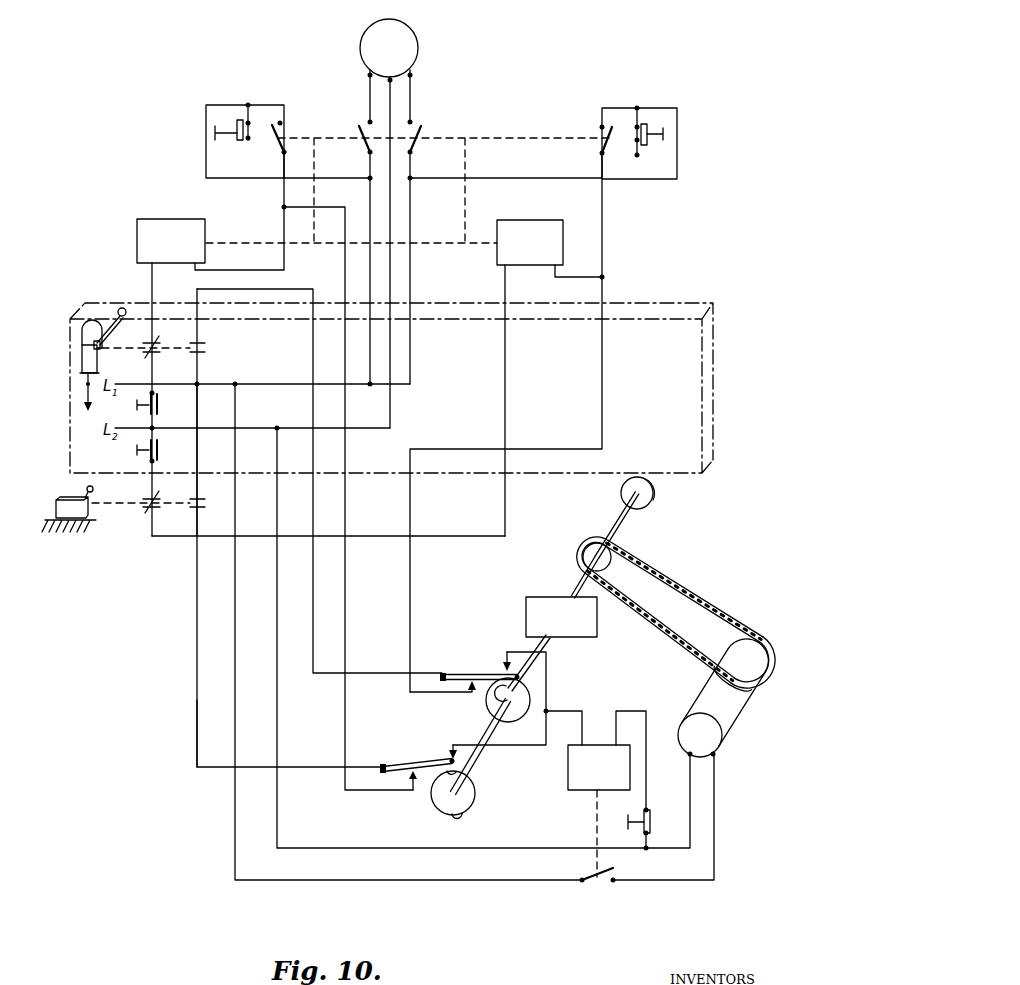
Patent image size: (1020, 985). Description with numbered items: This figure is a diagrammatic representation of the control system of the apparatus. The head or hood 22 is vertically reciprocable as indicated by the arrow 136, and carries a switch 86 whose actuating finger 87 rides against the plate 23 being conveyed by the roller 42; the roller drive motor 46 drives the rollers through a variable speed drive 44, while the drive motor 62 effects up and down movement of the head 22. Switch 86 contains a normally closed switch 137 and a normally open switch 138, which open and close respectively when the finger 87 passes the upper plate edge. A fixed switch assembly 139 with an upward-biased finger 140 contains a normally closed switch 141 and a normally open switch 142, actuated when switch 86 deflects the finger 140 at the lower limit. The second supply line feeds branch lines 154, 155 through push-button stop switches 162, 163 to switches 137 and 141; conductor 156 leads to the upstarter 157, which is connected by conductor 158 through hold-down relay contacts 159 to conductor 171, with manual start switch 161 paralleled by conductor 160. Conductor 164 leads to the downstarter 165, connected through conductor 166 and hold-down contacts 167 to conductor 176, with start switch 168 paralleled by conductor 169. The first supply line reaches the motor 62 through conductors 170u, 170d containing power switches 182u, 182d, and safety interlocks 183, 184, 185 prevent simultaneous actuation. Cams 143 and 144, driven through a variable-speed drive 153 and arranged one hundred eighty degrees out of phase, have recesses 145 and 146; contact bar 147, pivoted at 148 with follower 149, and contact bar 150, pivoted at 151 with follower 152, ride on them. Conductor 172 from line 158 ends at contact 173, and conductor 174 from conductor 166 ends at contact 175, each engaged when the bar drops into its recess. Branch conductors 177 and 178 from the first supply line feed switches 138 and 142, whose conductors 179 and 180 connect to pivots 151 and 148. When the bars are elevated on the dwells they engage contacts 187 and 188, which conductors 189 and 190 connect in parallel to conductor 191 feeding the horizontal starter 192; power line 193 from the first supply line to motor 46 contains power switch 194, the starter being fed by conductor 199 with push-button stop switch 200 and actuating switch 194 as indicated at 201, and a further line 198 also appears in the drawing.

The head or hood 22 is at (82, 362).
The plate or article 23 is at (713, 410).
The roller 42 is at (653, 500).
The variable speed drive 44 is at (750, 692).
The roller drive motor 46 is at (722, 736).
The drive motor 62 is at (418, 50).
The switch 86 is at (82, 345).
The actuating finger 87 is at (107, 314).
The arrow 136 is at (86, 399).
The normally closed switch 137 is at (142, 352).
The normally open switch 138 is at (205, 352).
The fixed switch assembly 139 is at (56, 508).
The switch actuating member or finger 140 is at (87, 489).
The normally closed switch 141 is at (143, 508).
The normally open switch 142 is at (205, 507).
The cam 143 is at (470, 795).
The cam 144 is at (488, 742).
The recess 145 is at (456, 814).
The recess 146 is at (497, 694).
The contact bar or blade 147 is at (432, 762).
The pivot 148 is at (373, 758).
The cam follower 149 is at (453, 793).
The contact bar 150 is at (478, 667).
The pivot 151 is at (437, 673).
The cam follower 152 is at (518, 720).
The variable-speed drive 153 is at (536, 597).
The branch line 154 is at (154, 393).
The branch line 155 is at (154, 466).
The conductor 156 is at (152, 282).
The upstarter 157 is at (170, 219).
The conductor 158 is at (284, 255).
The hold-down relay contacts 159 is at (282, 135).
The conductor 160 is at (244, 150).
The manual start switch 161 is at (219, 140).
The push-button stop switch 162 is at (137, 405).
The push-button stop switch 163 is at (137, 450).
The conductor 164 is at (152, 536).
The downstarter 165 is at (497, 266).
The conductor 166 is at (575, 280).
The hold-down relay contacts 167 is at (602, 127).
The manually operable start switch 168 is at (664, 128).
The conductor 169 is at (618, 155).
The conductor 170u is at (370, 198).
The conductor 170d is at (410, 208).
The conductor 171 is at (236, 178).
The conductor 172 is at (345, 279).
The contact 173 is at (415, 788).
The conductor 174 is at (556, 449).
The contact 175 is at (470, 697).
The conductor 176 is at (678, 155).
The branch conductor 177 is at (197, 371).
The branch conductor 178 is at (197, 451).
The conductor 179 is at (298, 289).
The conductor 180 is at (197, 634).
The power switch 182u is at (350, 140).
The power switch 182d is at (431, 140).
The safety interlock 183 is at (314, 168).
The safety interlock 184 is at (472, 165).
The safety interlock 185 is at (330, 242).
The contact 187 is at (453, 748).
The contact 188 is at (504, 656).
The conductor 189 is at (511, 749).
The conductor 190 is at (546, 697).
The conductor 191 is at (583, 714).
The horizontal starter 192 is at (579, 791).
The power line or conductor 193 is at (197, 825).
The power switch 194 is at (585, 883).
The conductor 198 is at (421, 848).
The conductor 199 is at (647, 776).
The push-button stop switch 200 is at (650, 815).
The operative connection 201 is at (586, 876).